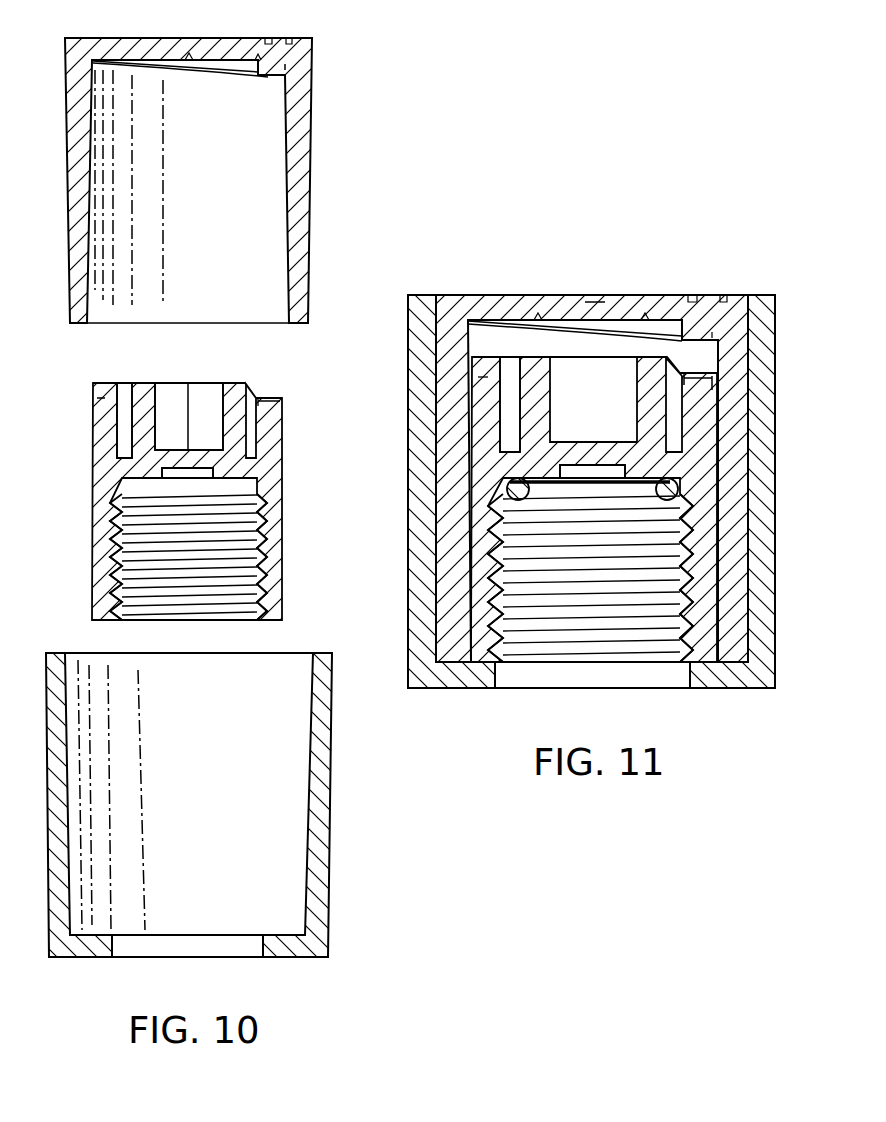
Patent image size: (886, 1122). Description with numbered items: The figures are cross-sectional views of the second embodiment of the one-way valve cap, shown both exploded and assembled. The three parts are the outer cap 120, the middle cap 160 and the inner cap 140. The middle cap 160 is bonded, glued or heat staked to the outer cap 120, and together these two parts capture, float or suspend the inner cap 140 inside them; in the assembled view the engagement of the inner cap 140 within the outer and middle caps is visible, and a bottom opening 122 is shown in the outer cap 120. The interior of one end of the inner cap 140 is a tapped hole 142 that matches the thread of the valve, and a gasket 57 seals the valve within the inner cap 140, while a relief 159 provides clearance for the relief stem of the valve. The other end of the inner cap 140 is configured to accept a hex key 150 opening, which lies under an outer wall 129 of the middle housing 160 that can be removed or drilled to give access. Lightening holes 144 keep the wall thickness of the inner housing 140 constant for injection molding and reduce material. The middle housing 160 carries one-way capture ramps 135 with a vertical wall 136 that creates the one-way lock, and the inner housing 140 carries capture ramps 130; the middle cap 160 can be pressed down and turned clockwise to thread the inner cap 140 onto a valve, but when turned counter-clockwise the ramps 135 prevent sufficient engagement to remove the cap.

In FIG. 11, the gasket 57 is at (680, 495).
In FIG. 10, the outer cap 120 is at (328, 820).
In FIG. 11, the outer cap 120 is at (410, 525).
In FIG. 10, the bottom opening 122 is at (135, 957).
In FIG. 11, the bottom opening 122 is at (518, 688).
In FIG. 11, the outer wall 129 is at (595, 302).
In FIG. 11, the capture ramp 130 is at (693, 373).
In FIG. 10, the one-way capture ramp 135 is at (253, 75).
In FIG. 10, the vertical wall 136 is at (267, 77).
In FIG. 10, the inner cap 140 is at (285, 432).
In FIG. 11, the inner cap 140 is at (717, 632).
In FIG. 10, the tapped hole 142 is at (263, 577).
In FIG. 11, the tapped hole 142 is at (592, 650).
In FIG. 10, the lightening holes 144 is at (128, 385).
In FIG. 11, the lightening holes 144 is at (510, 355).
In FIG. 10, the hex key opening 150 is at (182, 383).
In FIG. 10, the relief 159 is at (162, 473).
In FIG. 11, the relief 159 is at (630, 470).
In FIG. 10, the middle cap 160 is at (308, 183).
In FIG. 11, the middle cap 160 is at (750, 362).